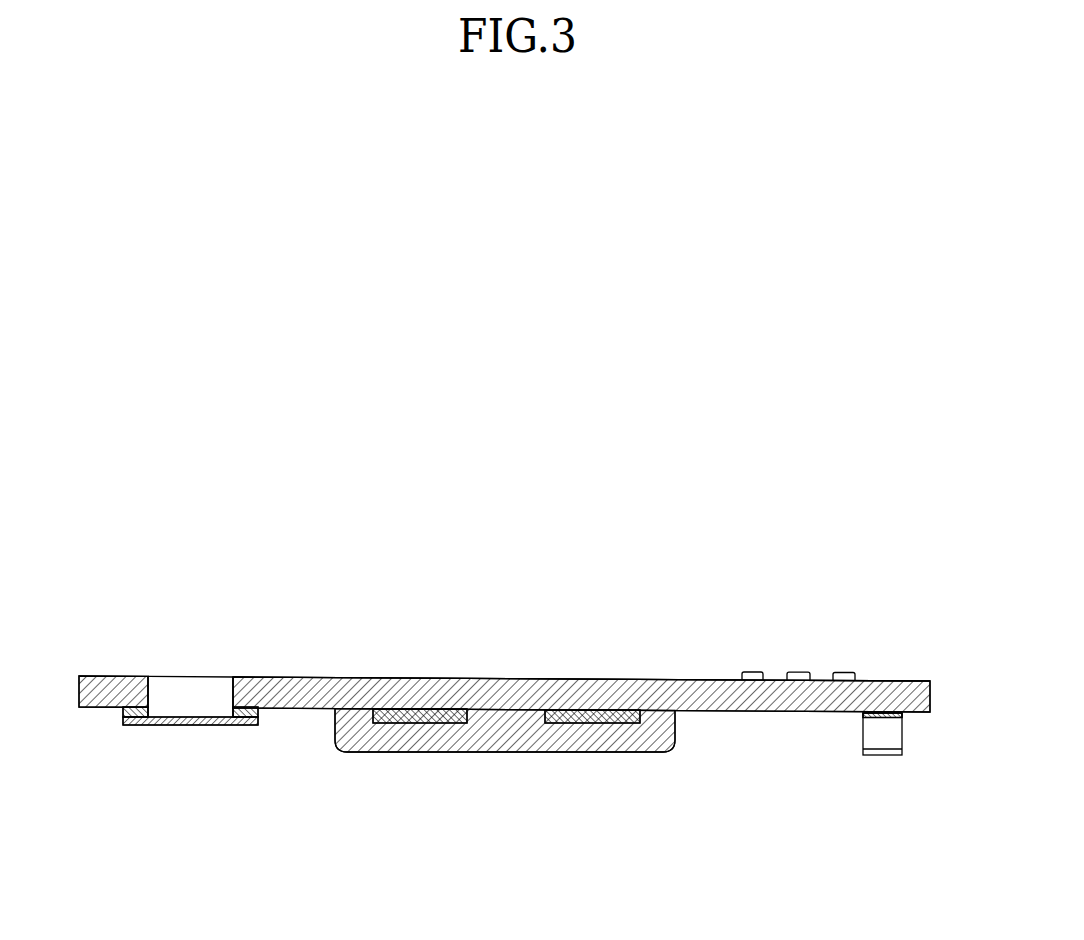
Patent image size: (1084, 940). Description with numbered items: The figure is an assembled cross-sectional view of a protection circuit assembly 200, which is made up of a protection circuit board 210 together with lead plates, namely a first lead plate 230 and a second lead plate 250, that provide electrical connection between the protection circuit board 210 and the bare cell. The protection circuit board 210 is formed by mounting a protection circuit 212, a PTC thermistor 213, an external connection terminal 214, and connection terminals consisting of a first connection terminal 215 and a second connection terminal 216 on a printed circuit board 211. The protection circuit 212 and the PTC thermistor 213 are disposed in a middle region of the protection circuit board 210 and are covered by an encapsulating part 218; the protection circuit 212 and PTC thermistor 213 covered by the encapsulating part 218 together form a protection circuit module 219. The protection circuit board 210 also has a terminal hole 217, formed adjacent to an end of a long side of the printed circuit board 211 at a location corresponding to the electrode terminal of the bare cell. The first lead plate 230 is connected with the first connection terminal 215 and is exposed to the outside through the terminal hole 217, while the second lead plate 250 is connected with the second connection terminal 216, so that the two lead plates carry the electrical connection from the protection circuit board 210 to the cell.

The protection circuit assembly 200 is at (122, 636).
The protection circuit board 210 is at (634, 668).
The printed circuit board 211 is at (541, 678).
The protection circuit 212 is at (433, 723).
The PTC thermistor 213 is at (560, 723).
The external connection terminal 214 is at (756, 671).
The first connection terminal 215 is at (249, 676).
The second connection terminal 216 is at (863, 716).
The terminal hole 217 is at (184, 676).
The encapsulating part 218 is at (497, 752).
The protection circuit module 219 is at (565, 818).
The first lead plate 230 is at (182, 726).
The second lead plate 250 is at (880, 757).